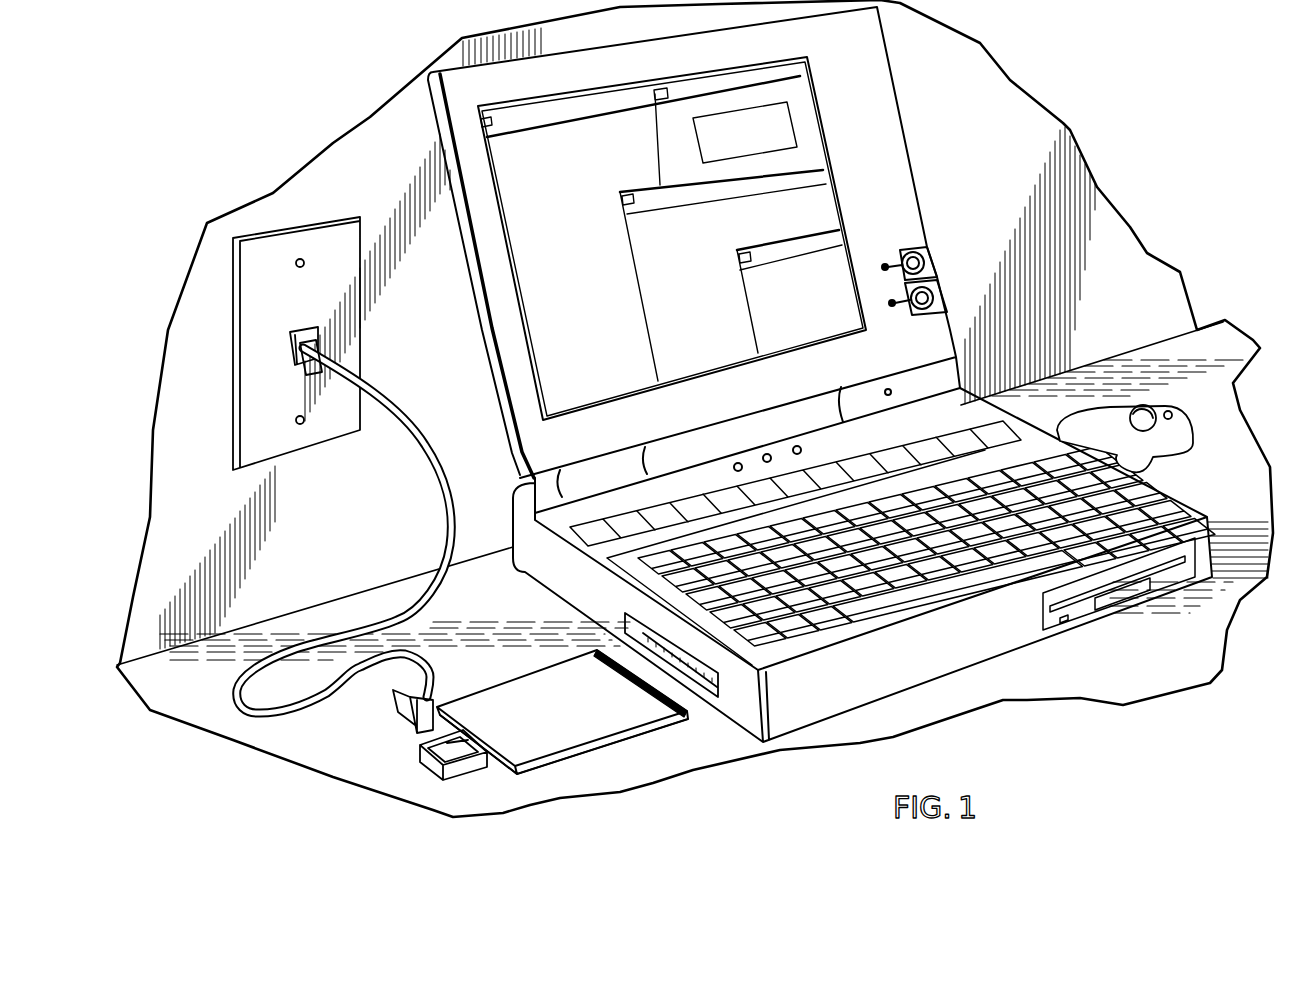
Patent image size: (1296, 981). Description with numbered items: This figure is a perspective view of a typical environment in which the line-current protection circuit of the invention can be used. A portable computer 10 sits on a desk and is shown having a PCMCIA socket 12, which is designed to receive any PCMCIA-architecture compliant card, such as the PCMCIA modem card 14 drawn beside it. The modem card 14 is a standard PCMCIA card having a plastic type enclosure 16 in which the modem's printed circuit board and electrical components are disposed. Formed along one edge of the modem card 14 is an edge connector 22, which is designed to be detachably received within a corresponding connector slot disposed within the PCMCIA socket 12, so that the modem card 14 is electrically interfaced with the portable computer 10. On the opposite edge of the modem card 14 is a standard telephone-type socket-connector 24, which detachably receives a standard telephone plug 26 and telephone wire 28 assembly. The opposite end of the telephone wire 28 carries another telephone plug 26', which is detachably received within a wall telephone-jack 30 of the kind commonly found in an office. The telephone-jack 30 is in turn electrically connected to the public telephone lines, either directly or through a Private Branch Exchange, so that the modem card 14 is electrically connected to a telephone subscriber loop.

The portable computer 10 is at (930, 203).
The PCMCIA socket 12 is at (767, 730).
The PCMCIA modem card 14 is at (569, 724).
The plastic type enclosure 16 is at (524, 772).
The edge connector 22 is at (720, 683).
The RJ-11 socket-connector 24 is at (420, 763).
The RJ-11 plug 26 is at (375, 721).
The RJ-11 plug 26' is at (212, 368).
The telephone wire 28 is at (230, 700).
The RJ-11 telephone-jack 30 is at (290, 341).